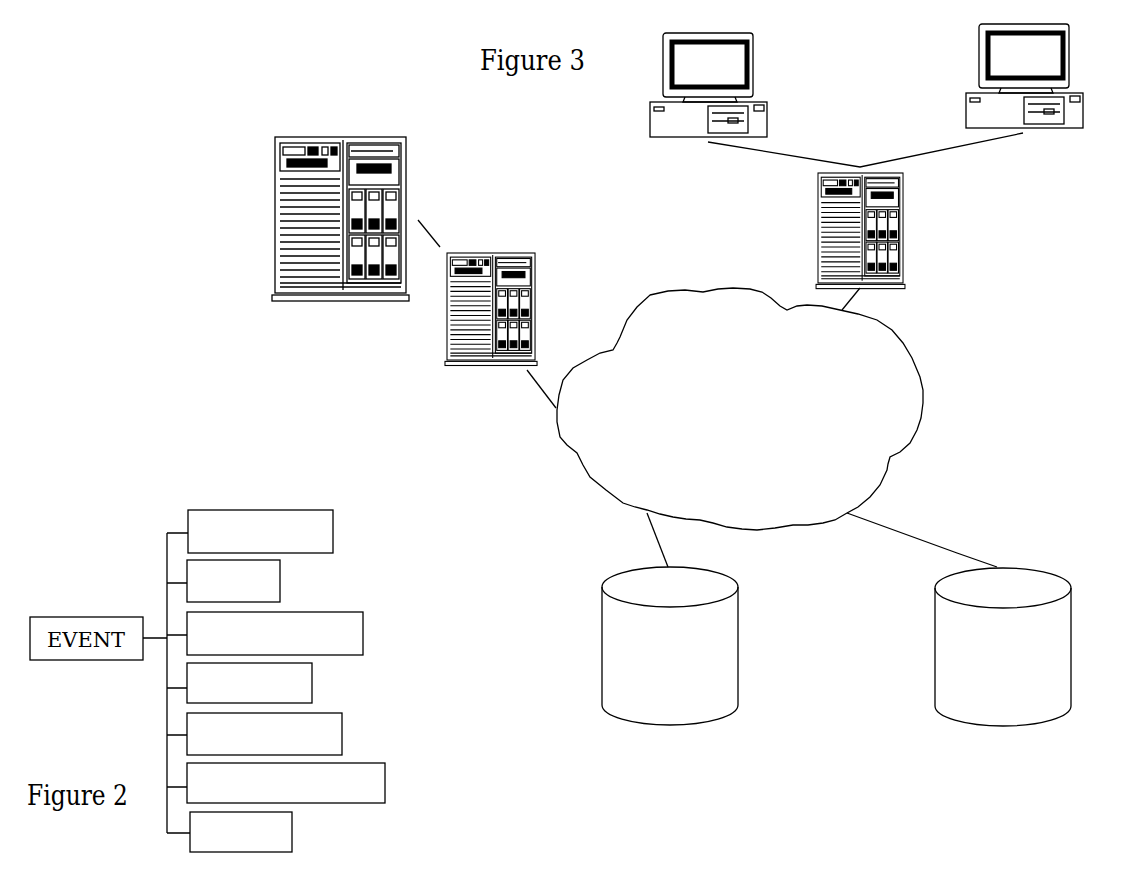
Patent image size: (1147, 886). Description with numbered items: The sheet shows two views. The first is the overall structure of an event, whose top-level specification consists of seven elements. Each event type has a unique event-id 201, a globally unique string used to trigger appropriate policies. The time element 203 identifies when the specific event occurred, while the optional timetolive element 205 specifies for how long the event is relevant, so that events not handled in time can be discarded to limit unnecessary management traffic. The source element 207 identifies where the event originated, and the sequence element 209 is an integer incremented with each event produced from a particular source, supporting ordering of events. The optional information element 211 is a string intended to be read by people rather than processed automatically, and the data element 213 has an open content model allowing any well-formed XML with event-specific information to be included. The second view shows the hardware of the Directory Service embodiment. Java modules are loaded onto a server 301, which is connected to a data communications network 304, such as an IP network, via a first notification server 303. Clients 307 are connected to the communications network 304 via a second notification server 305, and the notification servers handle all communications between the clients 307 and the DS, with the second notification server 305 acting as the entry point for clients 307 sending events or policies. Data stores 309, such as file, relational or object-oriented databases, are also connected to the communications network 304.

In FIG. 2, the event-id 201 is at (333, 530).
In FIG. 2, the time element 203 is at (280, 580).
In FIG. 2, the timetolive element 205 is at (363, 630).
In FIG. 2, the source element 207 is at (312, 683).
In FIG. 2, the sequence element 209 is at (342, 730).
In FIG. 2, the information element 211 is at (385, 780).
In FIG. 2, the data element 213 is at (292, 830).
In FIG. 3, the server 301 is at (340, 125).
In FIG. 3, the first notification server 303 is at (488, 249).
In FIG. 3, the data communications network 304 is at (923, 375).
In FIG. 3, the second notification server 305 is at (915, 228).
In FIG. 3, the clients 307 is at (952, 78).
In FIG. 3, the data stores 309 is at (930, 643).